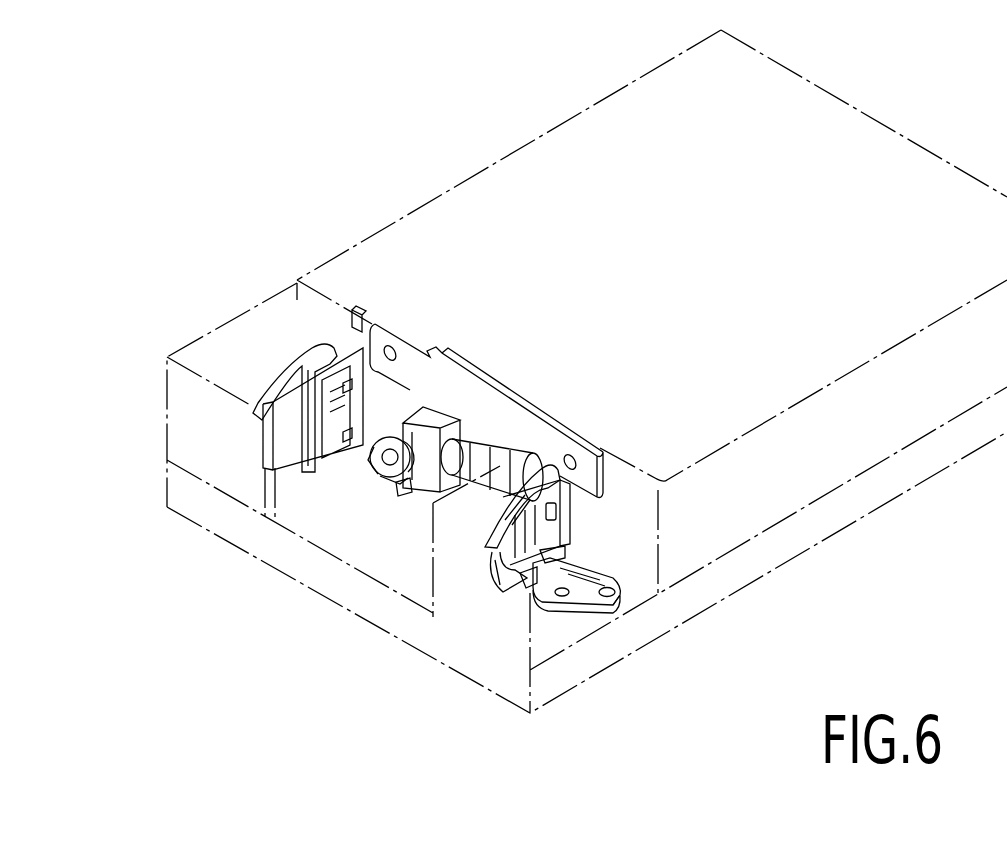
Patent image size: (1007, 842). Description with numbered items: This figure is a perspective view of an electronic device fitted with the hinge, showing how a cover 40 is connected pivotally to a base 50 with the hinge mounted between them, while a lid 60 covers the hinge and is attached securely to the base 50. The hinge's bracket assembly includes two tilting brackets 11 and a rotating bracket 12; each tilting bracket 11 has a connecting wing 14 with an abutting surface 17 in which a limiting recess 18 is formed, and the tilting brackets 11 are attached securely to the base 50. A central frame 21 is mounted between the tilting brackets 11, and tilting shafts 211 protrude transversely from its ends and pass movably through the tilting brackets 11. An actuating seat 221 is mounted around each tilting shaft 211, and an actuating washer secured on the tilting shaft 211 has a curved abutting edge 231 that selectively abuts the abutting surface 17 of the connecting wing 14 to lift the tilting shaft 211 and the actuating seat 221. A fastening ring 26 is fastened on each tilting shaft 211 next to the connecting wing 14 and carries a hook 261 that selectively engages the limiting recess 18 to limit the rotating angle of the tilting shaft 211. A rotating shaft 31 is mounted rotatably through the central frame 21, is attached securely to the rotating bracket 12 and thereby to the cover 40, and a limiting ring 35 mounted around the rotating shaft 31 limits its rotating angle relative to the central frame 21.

The tilting bracket 11 is at (617, 620).
The rotating bracket 12 is at (527, 417).
The connecting wing 14 is at (582, 597).
The abutting surface 17 is at (530, 587).
The limiting recess 18 is at (568, 562).
The central frame 21 is at (395, 398).
The fastening ring 26 is at (560, 522).
The rotating shaft 31 is at (470, 400).
The limiting ring 35 is at (400, 487).
The cover 40 is at (465, 208).
The base 50 is at (860, 503).
The lid 60 is at (238, 336).
The tilting shaft 211 is at (557, 510).
The actuating seat 221 is at (337, 430).
The abutting edge 231 is at (500, 590).
The hook 261 is at (262, 412).